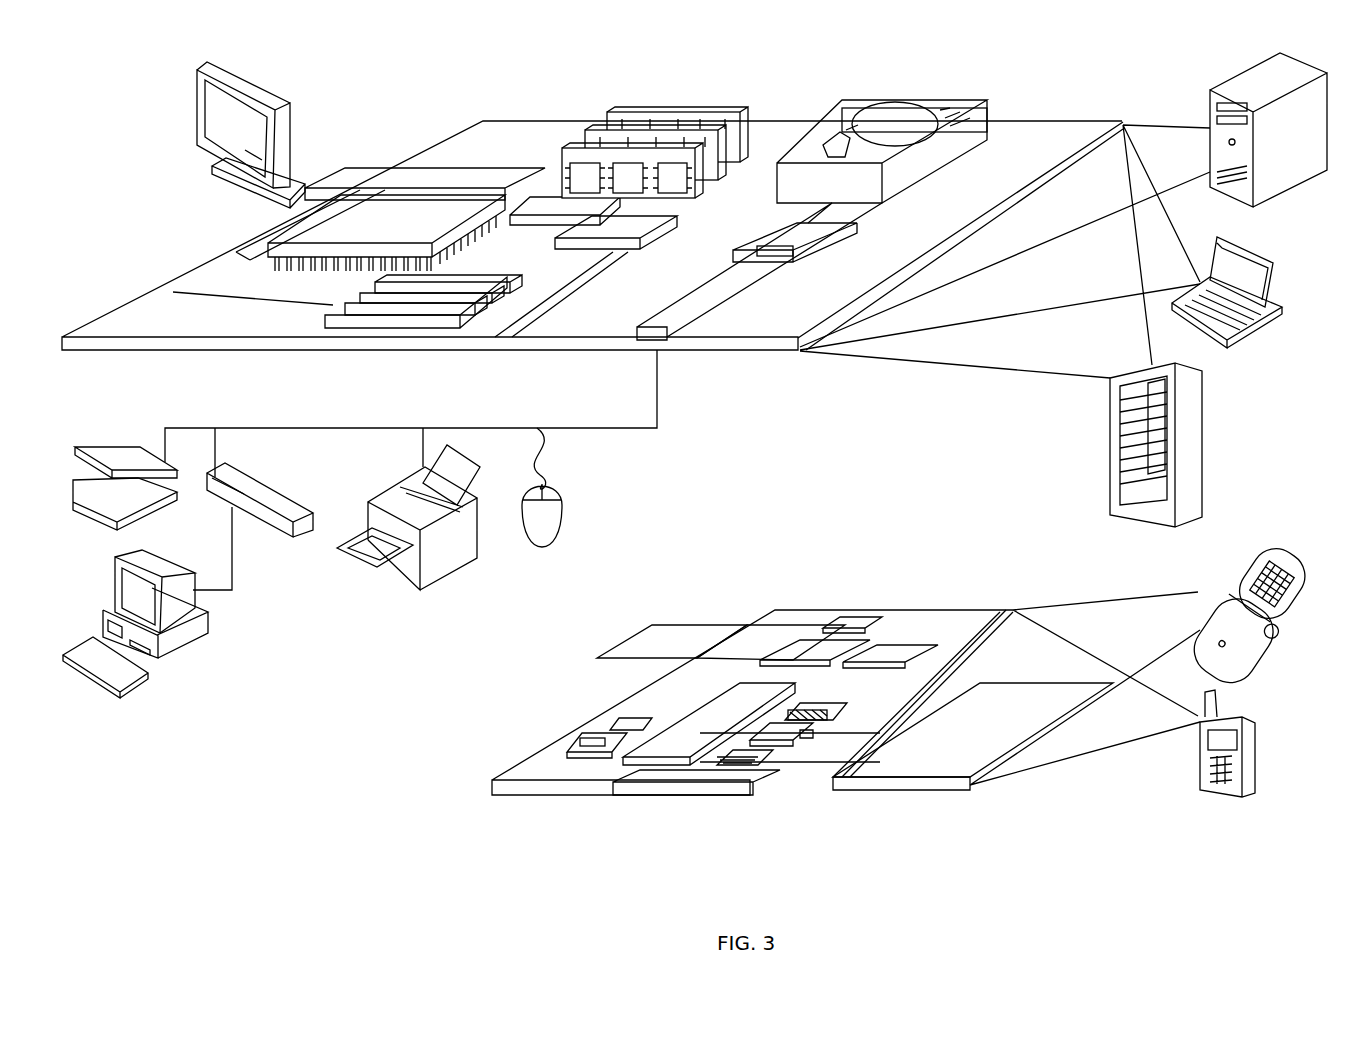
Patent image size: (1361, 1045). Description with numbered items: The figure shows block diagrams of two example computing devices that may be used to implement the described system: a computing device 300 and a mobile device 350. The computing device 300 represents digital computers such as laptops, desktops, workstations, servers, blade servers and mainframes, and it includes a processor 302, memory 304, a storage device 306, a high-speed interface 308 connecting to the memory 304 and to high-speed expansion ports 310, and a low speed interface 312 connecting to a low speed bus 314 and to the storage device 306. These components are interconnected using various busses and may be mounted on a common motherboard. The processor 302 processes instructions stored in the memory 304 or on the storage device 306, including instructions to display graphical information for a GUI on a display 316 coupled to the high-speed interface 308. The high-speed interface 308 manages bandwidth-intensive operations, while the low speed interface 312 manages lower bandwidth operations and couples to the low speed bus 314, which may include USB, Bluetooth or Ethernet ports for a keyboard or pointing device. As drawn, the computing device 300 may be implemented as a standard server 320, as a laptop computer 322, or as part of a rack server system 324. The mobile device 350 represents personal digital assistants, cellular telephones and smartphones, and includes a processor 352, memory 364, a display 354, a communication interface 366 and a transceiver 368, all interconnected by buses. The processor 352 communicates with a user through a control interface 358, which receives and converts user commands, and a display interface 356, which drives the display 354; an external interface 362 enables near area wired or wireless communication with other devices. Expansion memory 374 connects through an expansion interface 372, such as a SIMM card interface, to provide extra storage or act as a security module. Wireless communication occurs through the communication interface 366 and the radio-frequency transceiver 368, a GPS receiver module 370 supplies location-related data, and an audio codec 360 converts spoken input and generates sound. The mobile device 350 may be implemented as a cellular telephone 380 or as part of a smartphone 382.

The computing device 300 is at (410, 48).
The processor 302 is at (270, 247).
The memory 304 is at (633, 82).
The storage device 306 is at (872, 122).
The high-speed interface 308 is at (575, 217).
The high-speed expansion ports 310 is at (193, 268).
The low speed interface 312 is at (777, 233).
The low speed bus 314 is at (667, 340).
The display 316 is at (207, 64).
The standard server 320 is at (1210, 75).
The laptop computer 322 is at (1273, 232).
The rack server system 324 is at (1112, 470).
The mobile device 350 is at (460, 793).
The processor 352 is at (680, 790).
The display 354 is at (930, 767).
The display interface 356 is at (750, 770).
The control interface 358 is at (777, 737).
The audio codec 360 is at (800, 703).
The external interface 362 is at (642, 795).
The memory 364 is at (587, 737).
The communication interface 366 is at (807, 587).
The transceiver 368 is at (888, 650).
The GPS receiver module 370 is at (860, 568).
The expansion interface 372 is at (725, 622).
The expansion memory 374 is at (652, 625).
The cellular telephone 380 is at (1238, 532).
The smartphone 382 is at (1193, 788).